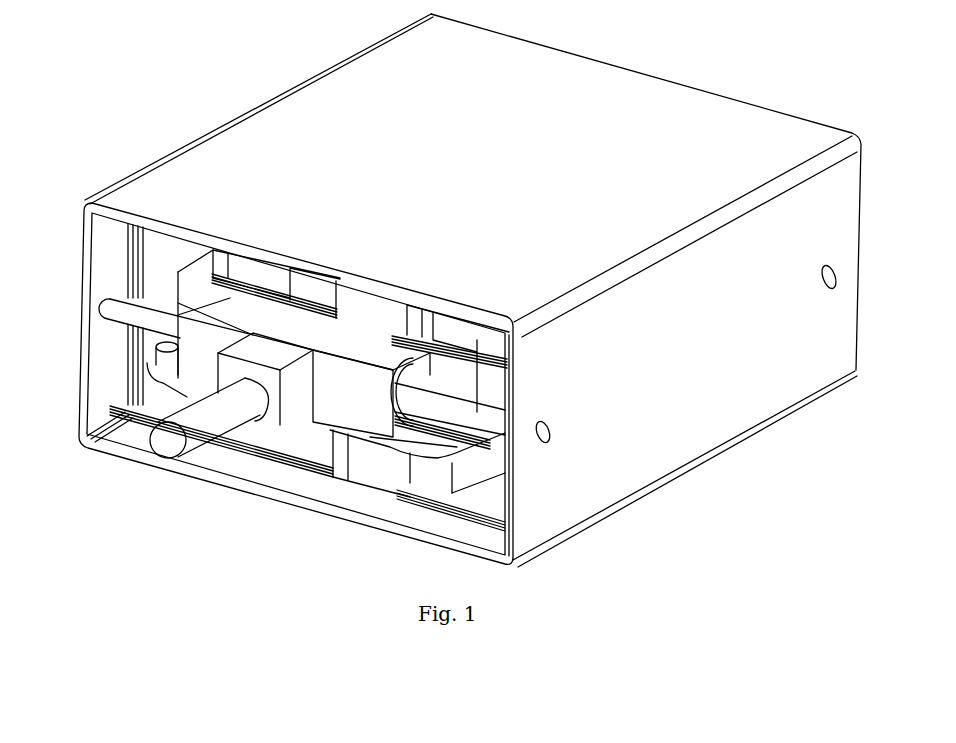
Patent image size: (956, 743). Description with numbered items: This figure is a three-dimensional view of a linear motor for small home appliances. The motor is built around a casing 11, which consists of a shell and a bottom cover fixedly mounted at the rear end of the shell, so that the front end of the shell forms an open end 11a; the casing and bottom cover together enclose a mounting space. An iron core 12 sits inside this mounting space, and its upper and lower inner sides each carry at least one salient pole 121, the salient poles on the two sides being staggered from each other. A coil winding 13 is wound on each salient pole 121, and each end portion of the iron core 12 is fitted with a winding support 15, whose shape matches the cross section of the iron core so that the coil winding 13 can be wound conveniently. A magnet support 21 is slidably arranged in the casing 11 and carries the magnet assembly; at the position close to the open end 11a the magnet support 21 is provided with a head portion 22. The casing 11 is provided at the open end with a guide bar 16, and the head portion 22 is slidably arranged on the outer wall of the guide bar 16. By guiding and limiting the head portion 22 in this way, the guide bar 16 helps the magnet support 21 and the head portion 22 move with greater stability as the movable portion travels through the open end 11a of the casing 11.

The casing 11 is at (743, 417).
The open end 11a is at (215, 458).
The iron core 12 is at (158, 260).
The salient pole 121 is at (510, 463).
The coil winding 13 is at (393, 477).
The winding support 15 is at (310, 473).
The guide bar 16 is at (103, 317).
The magnet support 21 is at (192, 278).
The head portion 22 is at (253, 432).